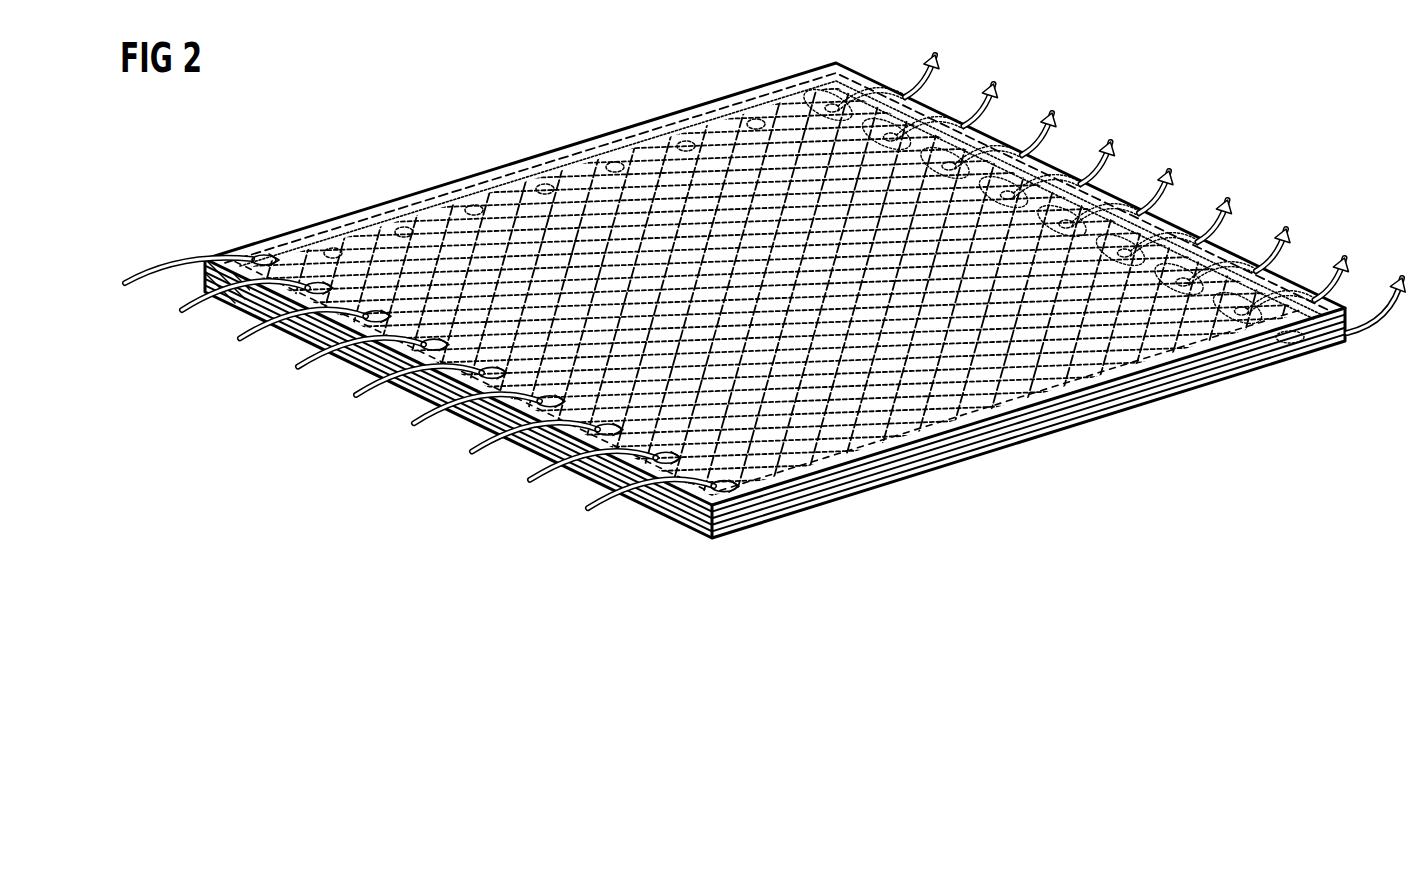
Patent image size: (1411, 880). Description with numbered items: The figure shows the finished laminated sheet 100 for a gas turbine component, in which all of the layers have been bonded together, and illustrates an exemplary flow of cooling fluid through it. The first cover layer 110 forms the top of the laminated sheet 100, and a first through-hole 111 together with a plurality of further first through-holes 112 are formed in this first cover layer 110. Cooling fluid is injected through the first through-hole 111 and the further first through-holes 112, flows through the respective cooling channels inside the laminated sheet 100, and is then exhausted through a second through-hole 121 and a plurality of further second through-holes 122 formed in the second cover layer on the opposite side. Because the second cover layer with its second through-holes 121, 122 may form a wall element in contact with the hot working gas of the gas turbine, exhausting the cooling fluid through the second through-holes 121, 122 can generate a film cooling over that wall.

The laminated sheet 100 is at (765, 284).
The first cover layer 110 is at (417, 193).
The first through-hole 111 is at (272, 251).
The further first through-holes 112 is at (261, 317).
The second through-hole 121 is at (1292, 355).
The further second through-holes 122 is at (867, 84).